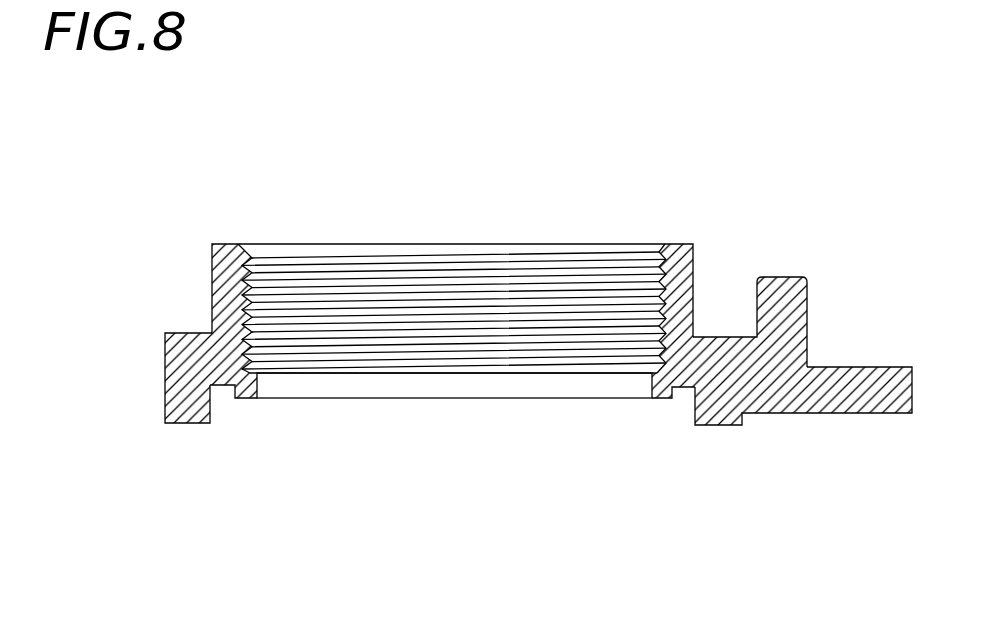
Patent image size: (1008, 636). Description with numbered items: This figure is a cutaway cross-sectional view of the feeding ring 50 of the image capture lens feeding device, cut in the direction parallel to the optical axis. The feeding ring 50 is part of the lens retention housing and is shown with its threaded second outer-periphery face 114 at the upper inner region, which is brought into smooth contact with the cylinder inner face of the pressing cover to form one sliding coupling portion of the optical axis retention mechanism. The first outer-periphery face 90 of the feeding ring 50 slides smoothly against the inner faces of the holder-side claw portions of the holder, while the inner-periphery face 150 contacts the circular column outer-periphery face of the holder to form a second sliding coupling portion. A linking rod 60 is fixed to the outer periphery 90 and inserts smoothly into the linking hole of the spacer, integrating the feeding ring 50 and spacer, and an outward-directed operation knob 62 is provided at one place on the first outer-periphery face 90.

The feeding ring 50 is at (813, 157).
The second outer-periphery face 114 is at (210, 272).
The first outer-periphery face 90 is at (162, 373).
The inner-periphery face 150 is at (213, 406).
The operation knob 62 is at (850, 415).
The linking rod 60 is at (806, 302).